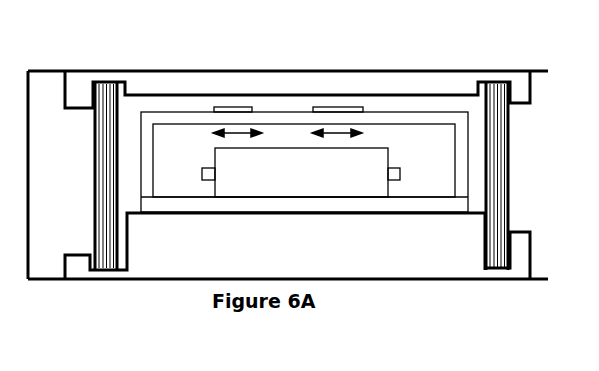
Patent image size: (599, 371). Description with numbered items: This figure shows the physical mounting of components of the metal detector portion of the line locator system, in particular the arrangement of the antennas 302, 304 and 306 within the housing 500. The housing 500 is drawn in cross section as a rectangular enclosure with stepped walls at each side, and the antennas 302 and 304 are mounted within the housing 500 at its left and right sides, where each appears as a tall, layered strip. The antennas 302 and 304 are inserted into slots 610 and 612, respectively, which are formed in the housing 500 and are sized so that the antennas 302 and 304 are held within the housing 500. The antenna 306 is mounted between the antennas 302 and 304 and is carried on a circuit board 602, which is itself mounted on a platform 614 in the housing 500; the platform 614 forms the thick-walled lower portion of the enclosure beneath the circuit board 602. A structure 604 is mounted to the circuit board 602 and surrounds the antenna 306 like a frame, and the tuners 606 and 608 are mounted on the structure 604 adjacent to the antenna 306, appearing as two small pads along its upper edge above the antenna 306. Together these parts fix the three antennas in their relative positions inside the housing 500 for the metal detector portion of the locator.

The housing 500 is at (113, 282).
The antenna 302 is at (110, 82).
The antenna 304 is at (495, 83).
The slot 610 is at (93, 110).
The slot 612 is at (510, 228).
The structure 604 is at (183, 118).
The circuit board 602 is at (238, 202).
The tuner 606 is at (250, 105).
The tuner 608 is at (359, 107).
The antenna 306 is at (332, 178).
The platform 614 is at (298, 217).